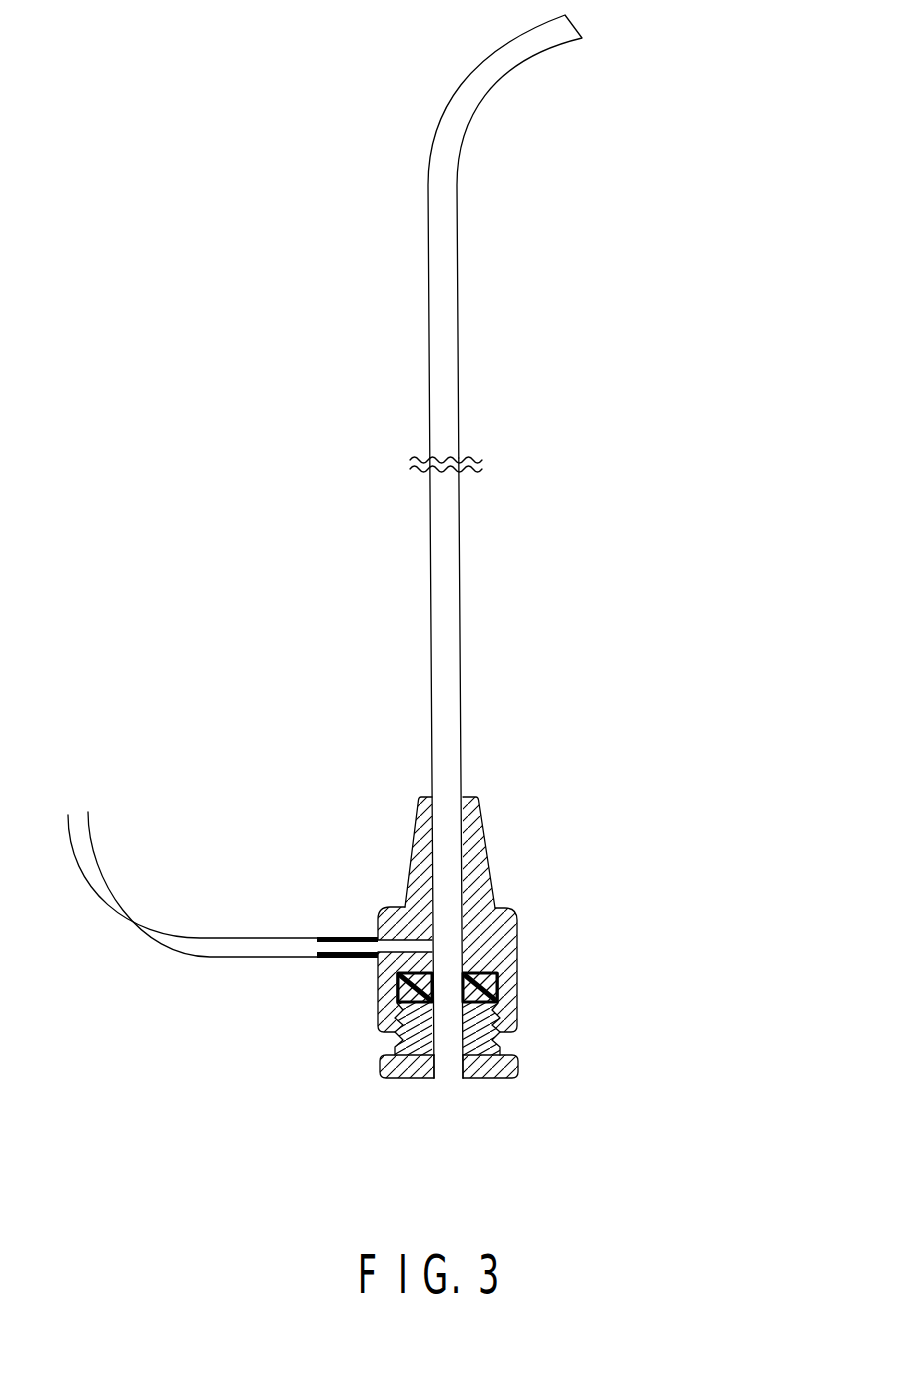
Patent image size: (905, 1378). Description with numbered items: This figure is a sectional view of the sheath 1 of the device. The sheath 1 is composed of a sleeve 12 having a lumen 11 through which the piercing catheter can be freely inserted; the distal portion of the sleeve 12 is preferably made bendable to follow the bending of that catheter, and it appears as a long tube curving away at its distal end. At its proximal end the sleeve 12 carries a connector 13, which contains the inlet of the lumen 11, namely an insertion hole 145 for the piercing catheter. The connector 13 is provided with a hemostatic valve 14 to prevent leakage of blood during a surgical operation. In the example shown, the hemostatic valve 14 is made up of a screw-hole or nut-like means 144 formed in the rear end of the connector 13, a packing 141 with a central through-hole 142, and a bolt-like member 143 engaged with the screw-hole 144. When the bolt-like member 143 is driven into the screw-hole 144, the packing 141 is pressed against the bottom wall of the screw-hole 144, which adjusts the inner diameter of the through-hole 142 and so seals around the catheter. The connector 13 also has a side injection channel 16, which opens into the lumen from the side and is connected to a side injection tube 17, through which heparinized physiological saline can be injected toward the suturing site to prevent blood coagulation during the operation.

The sheath 1 is at (490, 320).
The lumen 11 is at (436, 336).
The sleeve 12 is at (460, 550).
The connector 13 is at (488, 860).
The hemostatic valve 14 is at (532, 1018).
The packing 141 is at (517, 958).
The central through-hole 142 is at (460, 998).
The bolt-like member 143 is at (500, 1078).
The screw-hole 144 is at (376, 1008).
The insertion hole 145 is at (446, 1062).
The side injection channel 16 is at (362, 937).
The side injection tube 17 is at (88, 887).